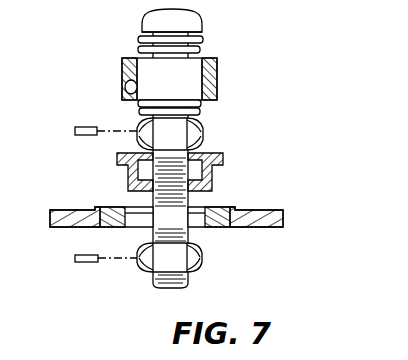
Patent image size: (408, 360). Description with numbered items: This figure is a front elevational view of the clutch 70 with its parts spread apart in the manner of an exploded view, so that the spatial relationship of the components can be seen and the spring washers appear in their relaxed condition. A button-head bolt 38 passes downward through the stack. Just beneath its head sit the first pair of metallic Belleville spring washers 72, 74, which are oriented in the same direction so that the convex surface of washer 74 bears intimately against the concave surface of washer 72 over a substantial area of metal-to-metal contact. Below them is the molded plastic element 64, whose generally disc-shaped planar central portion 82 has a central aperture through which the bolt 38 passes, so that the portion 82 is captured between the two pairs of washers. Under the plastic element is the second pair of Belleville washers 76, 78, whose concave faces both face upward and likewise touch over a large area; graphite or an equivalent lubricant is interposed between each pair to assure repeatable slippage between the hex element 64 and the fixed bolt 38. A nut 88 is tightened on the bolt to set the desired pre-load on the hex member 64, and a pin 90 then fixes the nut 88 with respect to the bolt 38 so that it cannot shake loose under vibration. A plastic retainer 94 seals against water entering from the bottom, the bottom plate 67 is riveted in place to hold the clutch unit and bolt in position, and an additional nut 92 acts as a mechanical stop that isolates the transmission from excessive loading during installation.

The button-head bolt 38 is at (166, 284).
The clutch 70 is at (116, 57).
The spring washer 72 is at (197, 36).
The spring washer 74 is at (198, 49).
The molded plastic element 64 is at (220, 87).
The central portion 82 is at (125, 87).
The spring washer 76 is at (203, 103).
The spring washer 78 is at (203, 112).
The nut 88 is at (197, 133).
The pin 90 is at (88, 136).
The plastic retainer 94 is at (125, 168).
The bottom plate 67 is at (270, 222).
The additional nut 92 is at (195, 258).